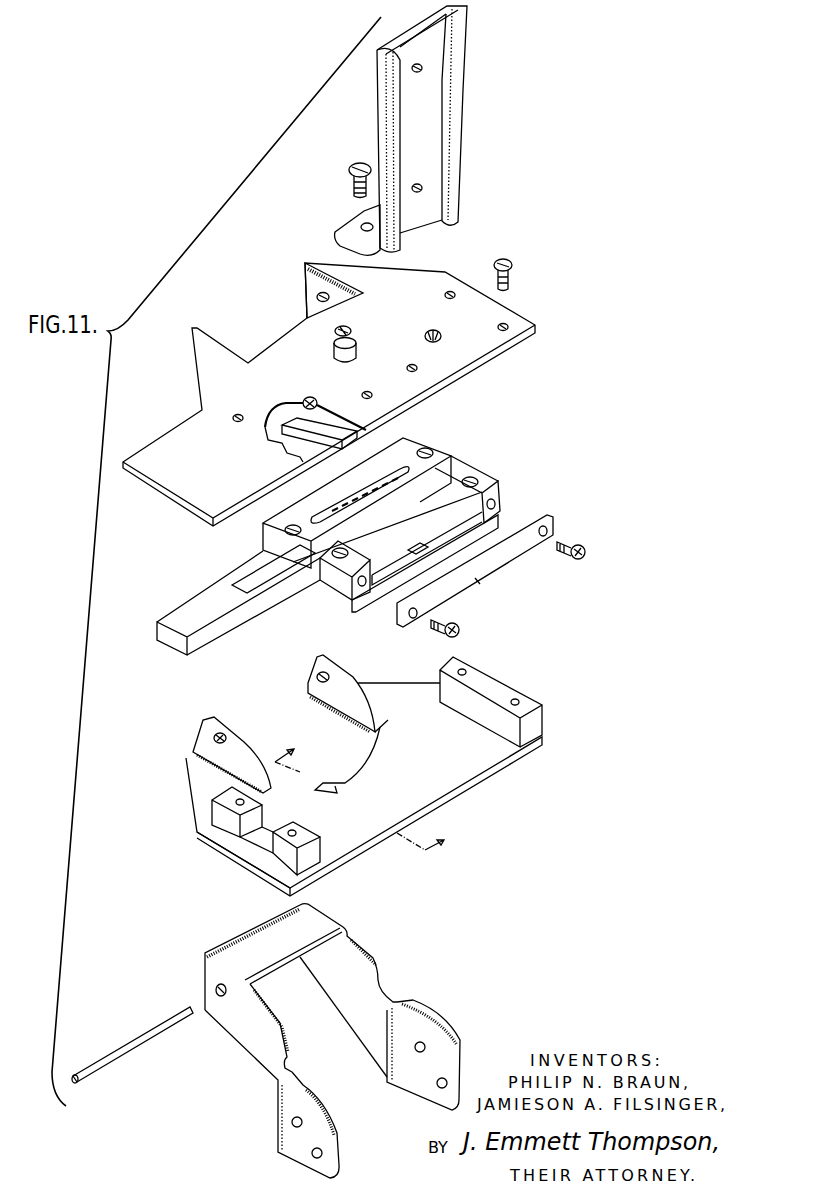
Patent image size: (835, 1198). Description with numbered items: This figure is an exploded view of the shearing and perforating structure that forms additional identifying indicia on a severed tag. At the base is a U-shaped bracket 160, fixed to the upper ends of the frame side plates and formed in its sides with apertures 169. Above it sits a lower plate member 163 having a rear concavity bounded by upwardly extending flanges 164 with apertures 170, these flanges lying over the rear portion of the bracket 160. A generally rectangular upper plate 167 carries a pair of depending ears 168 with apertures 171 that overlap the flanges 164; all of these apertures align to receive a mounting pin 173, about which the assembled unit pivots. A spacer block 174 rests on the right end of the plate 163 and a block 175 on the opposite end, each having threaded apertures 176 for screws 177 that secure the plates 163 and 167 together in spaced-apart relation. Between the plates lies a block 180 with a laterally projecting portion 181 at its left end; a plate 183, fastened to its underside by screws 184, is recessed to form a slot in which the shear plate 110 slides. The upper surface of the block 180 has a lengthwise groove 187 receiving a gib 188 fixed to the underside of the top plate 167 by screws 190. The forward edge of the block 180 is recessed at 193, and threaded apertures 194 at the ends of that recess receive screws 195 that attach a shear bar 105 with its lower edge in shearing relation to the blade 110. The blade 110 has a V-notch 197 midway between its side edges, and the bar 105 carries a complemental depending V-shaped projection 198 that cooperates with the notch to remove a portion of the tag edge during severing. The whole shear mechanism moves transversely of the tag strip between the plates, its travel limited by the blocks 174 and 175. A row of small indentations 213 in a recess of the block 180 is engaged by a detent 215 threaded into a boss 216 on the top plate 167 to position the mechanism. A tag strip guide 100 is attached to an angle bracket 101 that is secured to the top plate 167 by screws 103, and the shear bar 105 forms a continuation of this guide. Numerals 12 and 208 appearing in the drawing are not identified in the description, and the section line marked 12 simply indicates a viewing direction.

The guide member 100 is at (452, 142).
The angle bracket 101 is at (354, 222).
The screws 103 is at (353, 166).
The shear bar 105 is at (523, 546).
The shear plate 110 is at (457, 530).
The section line 12 is at (370, 792).
The U-shaped bracket 160 is at (432, 946).
The lower plate member 163 is at (456, 764).
The flanges 164 is at (212, 726).
The upper plate 167 is at (462, 343).
The depending ears 168 is at (303, 283).
The apertures 169 is at (213, 986).
The apertures 170 is at (213, 738).
The apertures 171 is at (317, 302).
The mounting pin 173 is at (133, 1040).
The spacer block 174 is at (498, 692).
The block 175 is at (283, 847).
The threaded apertures 176 is at (467, 670).
The screws 177 is at (512, 263).
The block 180 is at (492, 480).
The projecting portion 181 is at (183, 613).
The plate 183 is at (353, 600).
The screws 184 is at (292, 523).
The groove 187 is at (455, 462).
The gib 188 is at (296, 420).
The screws 190 is at (427, 330).
The recess 193 is at (392, 553).
The threaded apertures 194 is at (500, 504).
The screws 195 is at (460, 630).
The V-notch 197 is at (412, 548).
The V-shaped projection 198 is at (480, 582).
The guide 208 is at (323, 783).
The indentations 213 is at (355, 493).
The detent 215 is at (333, 348).
The boss 216 is at (350, 328).